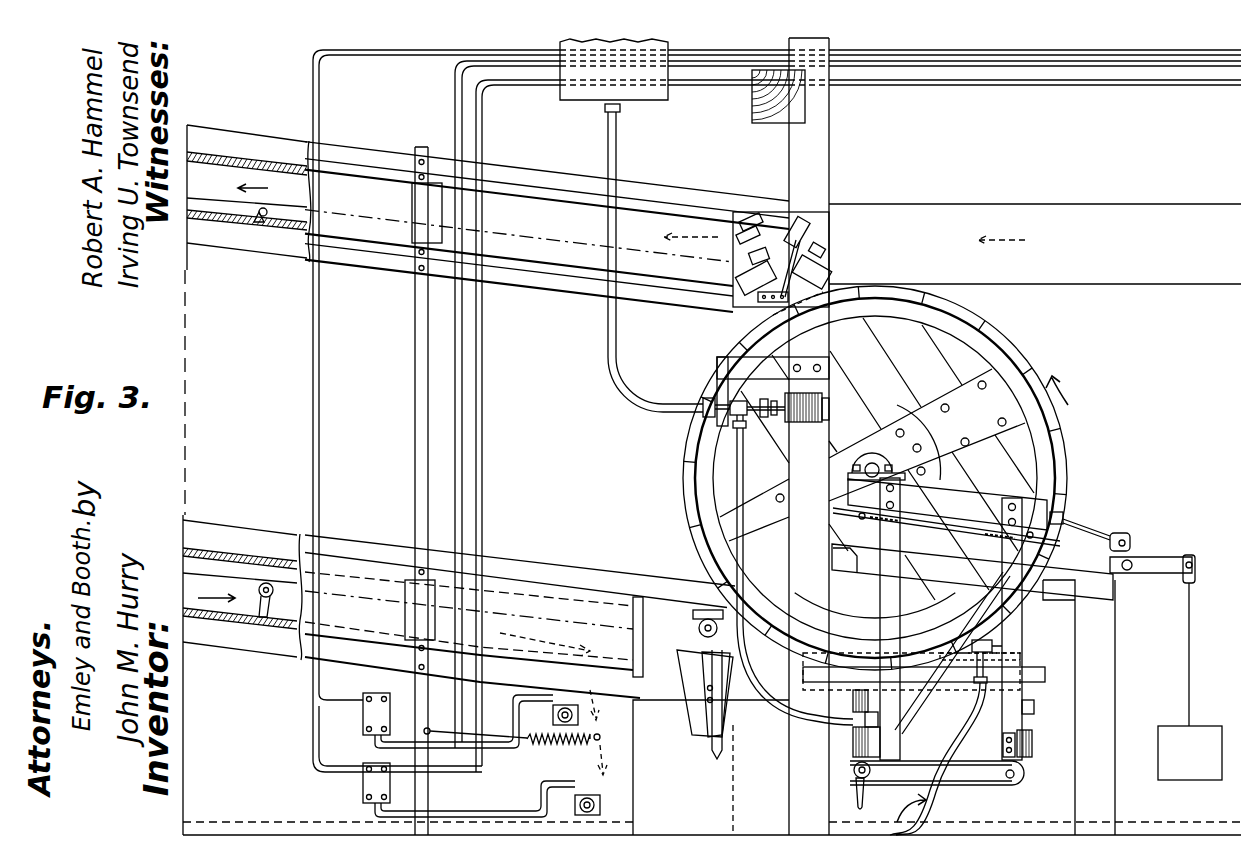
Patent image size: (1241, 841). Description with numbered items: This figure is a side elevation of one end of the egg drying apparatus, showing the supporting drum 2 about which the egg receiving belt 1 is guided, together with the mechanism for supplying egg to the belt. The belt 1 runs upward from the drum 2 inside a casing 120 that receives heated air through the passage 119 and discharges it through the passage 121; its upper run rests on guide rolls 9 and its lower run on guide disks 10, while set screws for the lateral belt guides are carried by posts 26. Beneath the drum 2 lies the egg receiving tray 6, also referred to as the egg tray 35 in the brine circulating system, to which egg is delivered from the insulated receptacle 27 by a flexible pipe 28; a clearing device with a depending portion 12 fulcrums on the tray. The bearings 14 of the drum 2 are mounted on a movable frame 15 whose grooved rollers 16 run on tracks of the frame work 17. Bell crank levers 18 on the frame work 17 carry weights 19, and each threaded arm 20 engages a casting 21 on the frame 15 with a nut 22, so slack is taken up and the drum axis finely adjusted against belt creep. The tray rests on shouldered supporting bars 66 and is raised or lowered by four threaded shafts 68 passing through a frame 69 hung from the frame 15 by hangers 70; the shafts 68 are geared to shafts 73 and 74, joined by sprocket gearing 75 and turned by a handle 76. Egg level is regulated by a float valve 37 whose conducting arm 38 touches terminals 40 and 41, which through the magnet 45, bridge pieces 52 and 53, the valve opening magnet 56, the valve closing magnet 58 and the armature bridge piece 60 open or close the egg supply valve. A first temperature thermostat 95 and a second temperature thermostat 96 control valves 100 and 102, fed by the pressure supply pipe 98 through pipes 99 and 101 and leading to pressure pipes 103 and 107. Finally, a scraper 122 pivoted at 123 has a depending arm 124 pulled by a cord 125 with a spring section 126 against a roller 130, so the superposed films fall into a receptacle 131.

The belt 1 is at (221, 158).
The supporting drum 2 is at (1012, 340).
The egg receiving tray 6 is at (848, 662).
The guide rolls 9 is at (260, 216).
The guide disks 10 is at (258, 606).
The depending portion 12 is at (745, 420).
The bearings 14 is at (874, 463).
The movable frame 15 is at (947, 504).
The grooved rollers 16 is at (862, 519).
The frame work 17 is at (972, 568).
The bell crank levers 18 is at (1160, 558).
The weights 19 is at (1190, 753).
The arm 20 is at (1118, 535).
The casting 21 is at (1076, 522).
The nut 22 is at (1058, 512).
The posts 26 is at (415, 428).
The receptacle 27 is at (664, 97).
The flexible pipe 28 is at (608, 378).
The egg tray 35 is at (940, 802).
The float valve 37 is at (985, 661).
The arm 38 is at (1005, 615).
The terminal 40 is at (1008, 638).
The terminal 41 is at (1012, 650).
The magnet 45 is at (802, 422).
The bridge piece 52 is at (756, 218).
The bridge piece 53 is at (772, 222).
The valve opening magnet 56 is at (736, 290).
The valve closing magnet 58 is at (830, 262).
The bridge piece 60 is at (790, 216).
The shouldered supporting bars 66 is at (1038, 712).
The threaded shafts 68 is at (851, 728).
The frame 69 is at (1032, 754).
The hangers 70 is at (1045, 678).
The shaft 73 is at (1022, 777).
The shaft 74 is at (868, 780).
The sprocket gearing 75 is at (996, 790).
The handle 76 is at (856, 797).
The first temperature thermostat 95 is at (563, 706).
The second temperature thermostat 96 is at (590, 806).
The pressure supply pipe 98 is at (312, 324).
The pipe 99 is at (318, 702).
The valve 100 is at (368, 694).
The pipe 101 is at (326, 780).
The valve 102 is at (365, 790).
The pressure pipe 103 is at (463, 333).
The pressure pipe 107 is at (483, 368).
The passage 119 is at (1035, 244).
The casing 120 is at (568, 212).
The passage 121 is at (622, 768).
The scraper 122 is at (636, 640).
The pivot 123 is at (708, 680).
The depending arm 124 is at (720, 749).
The cord 125 is at (490, 742).
The spring section 126 is at (535, 745).
The roller 130 is at (694, 624).
The receptacle 131 is at (712, 722).